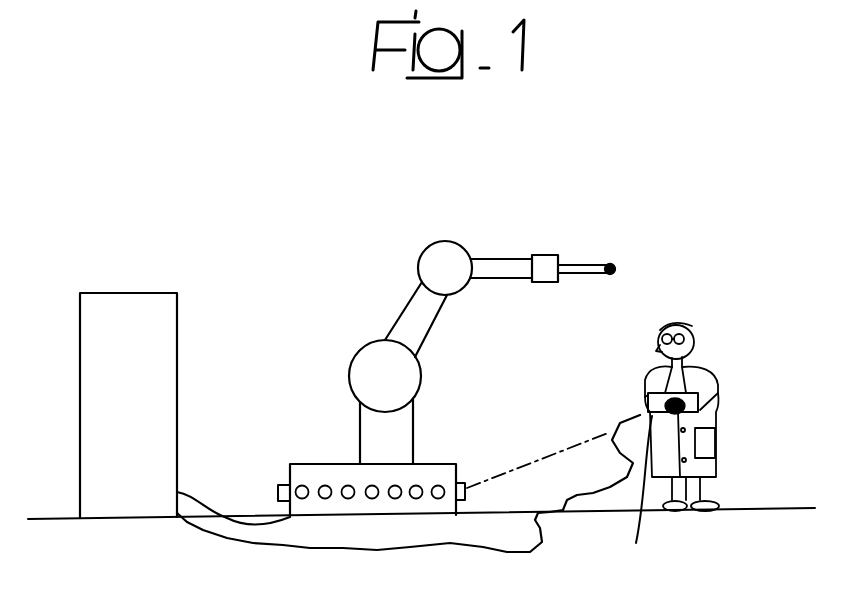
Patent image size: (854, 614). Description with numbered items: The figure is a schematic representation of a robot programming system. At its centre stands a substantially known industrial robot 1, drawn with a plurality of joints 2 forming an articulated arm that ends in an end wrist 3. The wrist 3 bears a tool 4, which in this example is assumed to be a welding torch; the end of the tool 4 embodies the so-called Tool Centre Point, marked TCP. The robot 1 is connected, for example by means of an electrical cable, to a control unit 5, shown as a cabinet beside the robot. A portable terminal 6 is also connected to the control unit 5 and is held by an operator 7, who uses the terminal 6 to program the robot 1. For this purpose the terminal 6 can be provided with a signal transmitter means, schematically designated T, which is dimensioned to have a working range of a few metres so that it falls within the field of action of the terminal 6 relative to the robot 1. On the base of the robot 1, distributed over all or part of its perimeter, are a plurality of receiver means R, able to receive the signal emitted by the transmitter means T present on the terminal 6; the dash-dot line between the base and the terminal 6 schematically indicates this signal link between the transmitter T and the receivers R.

The industrial robot 1 is at (320, 260).
The joints 2 is at (441, 254).
The end wrist 3 is at (543, 257).
The tool 4 is at (585, 262).
The control unit 5 is at (120, 307).
The portable terminal 6 is at (710, 413).
The operator 7 is at (710, 356).
The receiver means R is at (326, 485).
The transmitter means T is at (639, 497).
The Tool Centre Point TCP is at (617, 271).